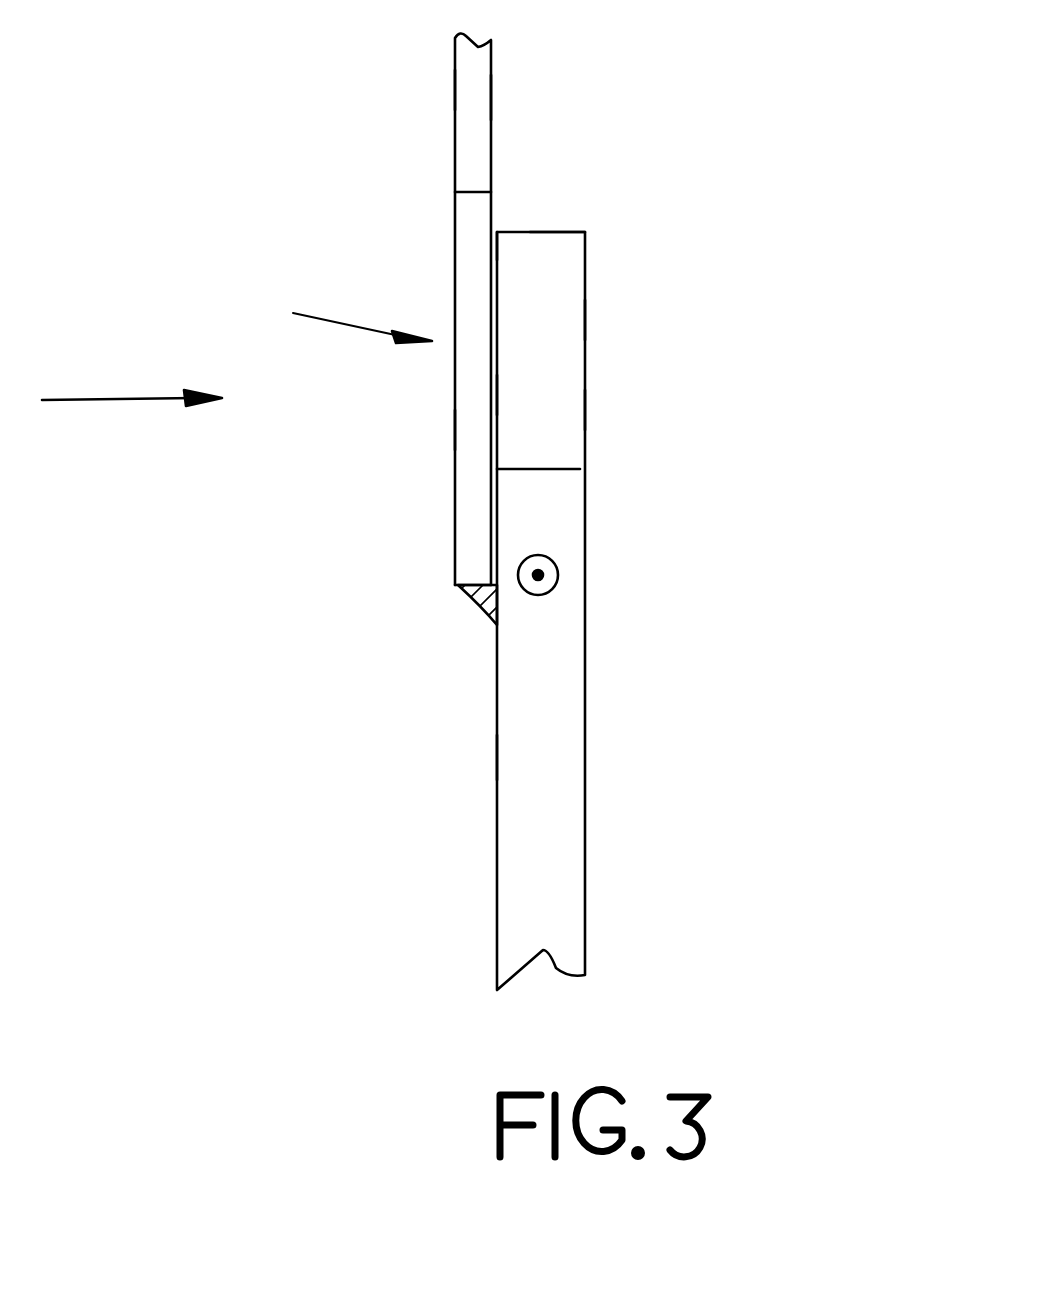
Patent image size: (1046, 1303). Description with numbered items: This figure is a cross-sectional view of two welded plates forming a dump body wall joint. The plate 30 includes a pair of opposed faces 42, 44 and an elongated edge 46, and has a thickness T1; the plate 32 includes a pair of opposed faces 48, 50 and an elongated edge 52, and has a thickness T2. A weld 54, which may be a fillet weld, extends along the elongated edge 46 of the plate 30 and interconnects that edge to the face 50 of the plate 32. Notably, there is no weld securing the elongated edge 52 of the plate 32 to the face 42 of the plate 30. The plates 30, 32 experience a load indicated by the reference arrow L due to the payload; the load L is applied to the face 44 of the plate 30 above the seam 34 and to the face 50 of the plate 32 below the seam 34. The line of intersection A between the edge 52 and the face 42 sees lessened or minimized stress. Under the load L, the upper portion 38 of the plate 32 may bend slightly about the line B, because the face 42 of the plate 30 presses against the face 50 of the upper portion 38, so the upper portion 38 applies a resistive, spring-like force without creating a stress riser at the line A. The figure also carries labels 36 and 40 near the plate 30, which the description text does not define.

The plate 30 is at (455, 158).
The plate 32 is at (585, 523).
The seam 34 is at (497, 394).
The outer surface of first member 36 is at (455, 430).
The upper portion 38 is at (585, 320).
The direction of laser beam / weld 40 is at (334, 313).
The face 42 is at (492, 98).
The face 44 is at (455, 90).
The elongated edge 46 is at (458, 588).
The face 48 is at (585, 410).
The face 50 is at (497, 757).
The elongated edge 52 is at (560, 232).
The weld 54 is at (480, 608).
The line of intersection A is at (498, 232).
The line B is at (558, 575).
The load L is at (105, 400).
The thickness T1 is at (466, 194).
The thickness T2 is at (585, 443).